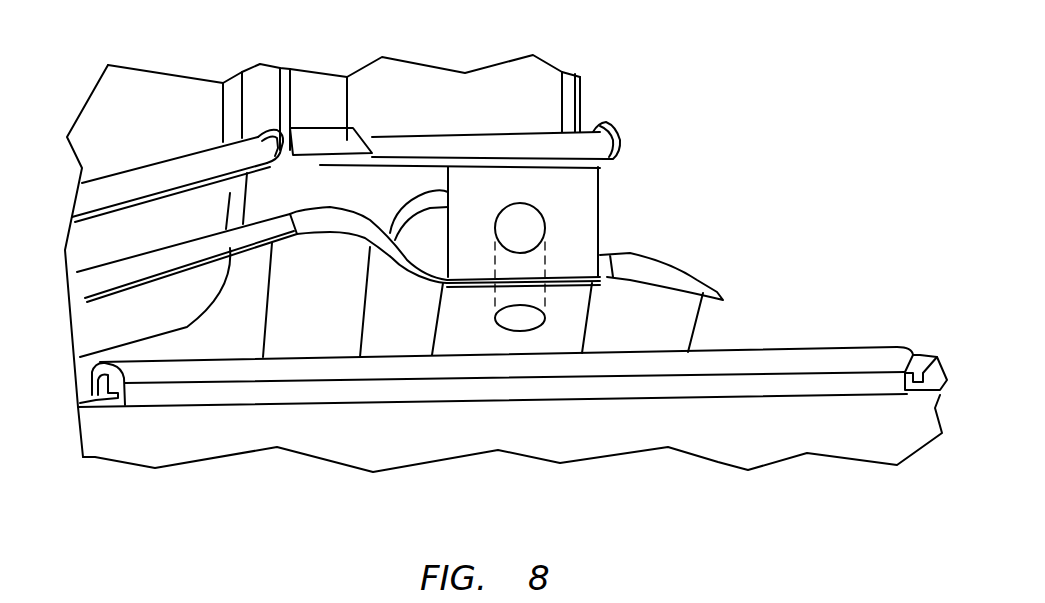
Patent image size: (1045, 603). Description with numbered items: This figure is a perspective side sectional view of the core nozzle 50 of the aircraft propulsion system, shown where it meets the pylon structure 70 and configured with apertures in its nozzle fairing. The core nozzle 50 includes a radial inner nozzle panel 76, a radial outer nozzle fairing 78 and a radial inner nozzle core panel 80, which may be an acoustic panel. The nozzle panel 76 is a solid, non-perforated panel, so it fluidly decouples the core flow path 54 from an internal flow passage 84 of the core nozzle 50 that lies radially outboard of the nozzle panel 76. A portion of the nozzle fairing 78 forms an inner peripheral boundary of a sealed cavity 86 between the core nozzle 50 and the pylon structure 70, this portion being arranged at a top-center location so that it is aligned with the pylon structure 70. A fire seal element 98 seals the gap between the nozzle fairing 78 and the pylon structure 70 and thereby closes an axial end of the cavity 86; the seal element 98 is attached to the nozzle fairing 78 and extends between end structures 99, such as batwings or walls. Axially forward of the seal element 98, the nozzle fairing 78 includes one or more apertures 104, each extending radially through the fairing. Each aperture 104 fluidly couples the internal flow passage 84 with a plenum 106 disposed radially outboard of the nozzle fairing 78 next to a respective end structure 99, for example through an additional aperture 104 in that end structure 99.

The core nozzle 50 is at (752, 276).
The core flow path 54 is at (295, 500).
The pylon structure 70 is at (62, 150).
The radial inner nozzle panel 76 is at (97, 418).
The radial outer nozzle fairing 78 is at (80, 278).
The radial inner nozzle core panel 80 is at (183, 420).
The internal flow passage 84 is at (325, 322).
The cavity 86 is at (192, 231).
The seal element 98 is at (398, 182).
The end structure 99 is at (588, 183).
The aperture 104 is at (525, 228).
The plenum 106 is at (772, 178).